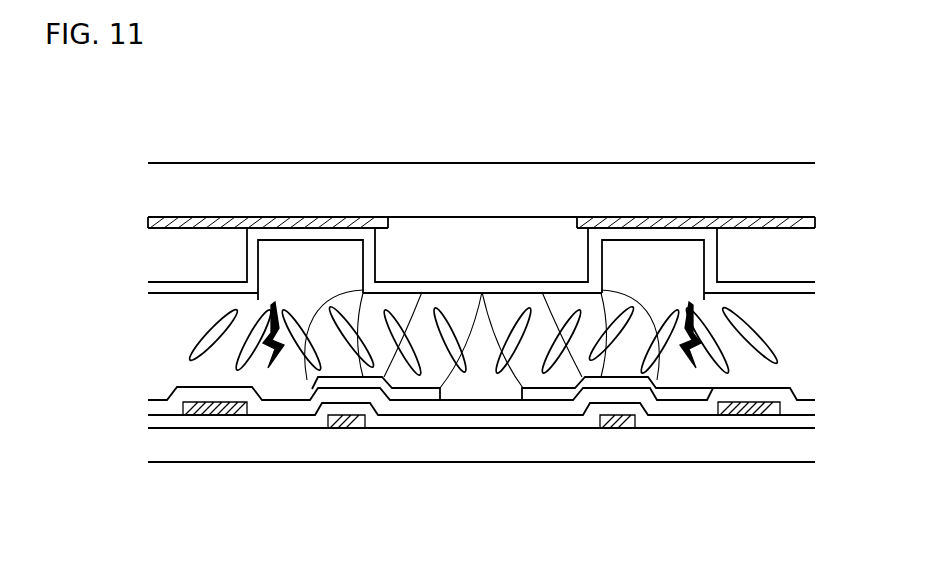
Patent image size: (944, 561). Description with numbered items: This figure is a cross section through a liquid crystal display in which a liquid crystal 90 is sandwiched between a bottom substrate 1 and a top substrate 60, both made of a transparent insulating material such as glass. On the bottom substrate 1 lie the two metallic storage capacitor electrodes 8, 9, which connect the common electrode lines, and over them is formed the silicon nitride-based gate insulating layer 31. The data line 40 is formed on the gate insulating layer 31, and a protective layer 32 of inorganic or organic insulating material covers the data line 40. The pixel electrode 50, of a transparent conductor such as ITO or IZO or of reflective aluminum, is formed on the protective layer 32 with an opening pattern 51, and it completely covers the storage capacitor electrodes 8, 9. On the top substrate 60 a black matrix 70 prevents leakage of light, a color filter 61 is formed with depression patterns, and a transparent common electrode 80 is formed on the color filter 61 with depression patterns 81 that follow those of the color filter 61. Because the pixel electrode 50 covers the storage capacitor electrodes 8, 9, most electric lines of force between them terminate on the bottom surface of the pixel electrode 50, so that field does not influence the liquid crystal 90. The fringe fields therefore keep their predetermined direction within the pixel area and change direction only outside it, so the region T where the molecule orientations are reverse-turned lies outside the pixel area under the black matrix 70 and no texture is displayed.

The bottom substrate 1 is at (506, 462).
The storage capacitor electrode 8 is at (628, 428).
The storage capacitor electrode 9 is at (337, 427).
The gate insulating layer 31 is at (542, 413).
The protective layer 32 is at (403, 413).
The data line 40 is at (757, 415).
The pixel electrode 50 is at (573, 397).
The opening pattern 51 is at (490, 400).
The top substrate 60 is at (512, 182).
The color filter 61 is at (487, 228).
The black matrix 70 is at (212, 216).
The common electrode 80 is at (447, 288).
The depression pattern 81 is at (310, 245).
The liquid crystal 90 is at (800, 343).
The region of reverse-turned orientation T is at (274, 302).